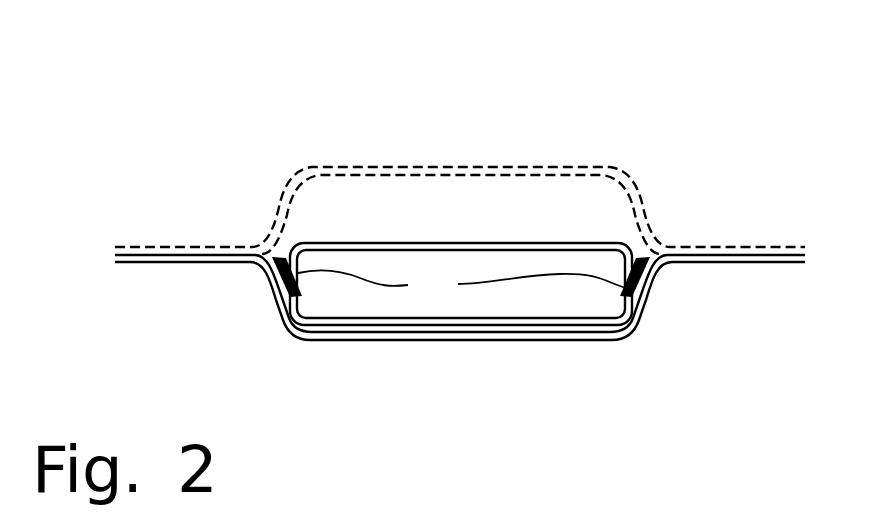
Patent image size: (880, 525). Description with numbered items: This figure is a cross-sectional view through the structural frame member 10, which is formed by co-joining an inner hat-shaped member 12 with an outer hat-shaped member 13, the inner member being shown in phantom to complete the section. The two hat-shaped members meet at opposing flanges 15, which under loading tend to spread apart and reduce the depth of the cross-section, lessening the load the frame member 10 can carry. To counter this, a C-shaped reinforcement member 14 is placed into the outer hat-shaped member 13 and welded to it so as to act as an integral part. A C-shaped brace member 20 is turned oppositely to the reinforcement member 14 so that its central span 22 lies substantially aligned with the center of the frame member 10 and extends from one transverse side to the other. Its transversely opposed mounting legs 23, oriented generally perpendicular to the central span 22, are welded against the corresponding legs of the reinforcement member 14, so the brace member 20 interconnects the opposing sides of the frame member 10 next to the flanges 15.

The frame member 10 is at (203, 105).
The inner hat-shaped member 12 is at (612, 167).
The outer hat-shaped member 13 is at (628, 337).
The reinforcement member 14 is at (378, 313).
The flanges 15 is at (167, 247).
The brace member 20 is at (409, 212).
The central span 22 is at (450, 243).
The mounting legs 23 is at (462, 286).